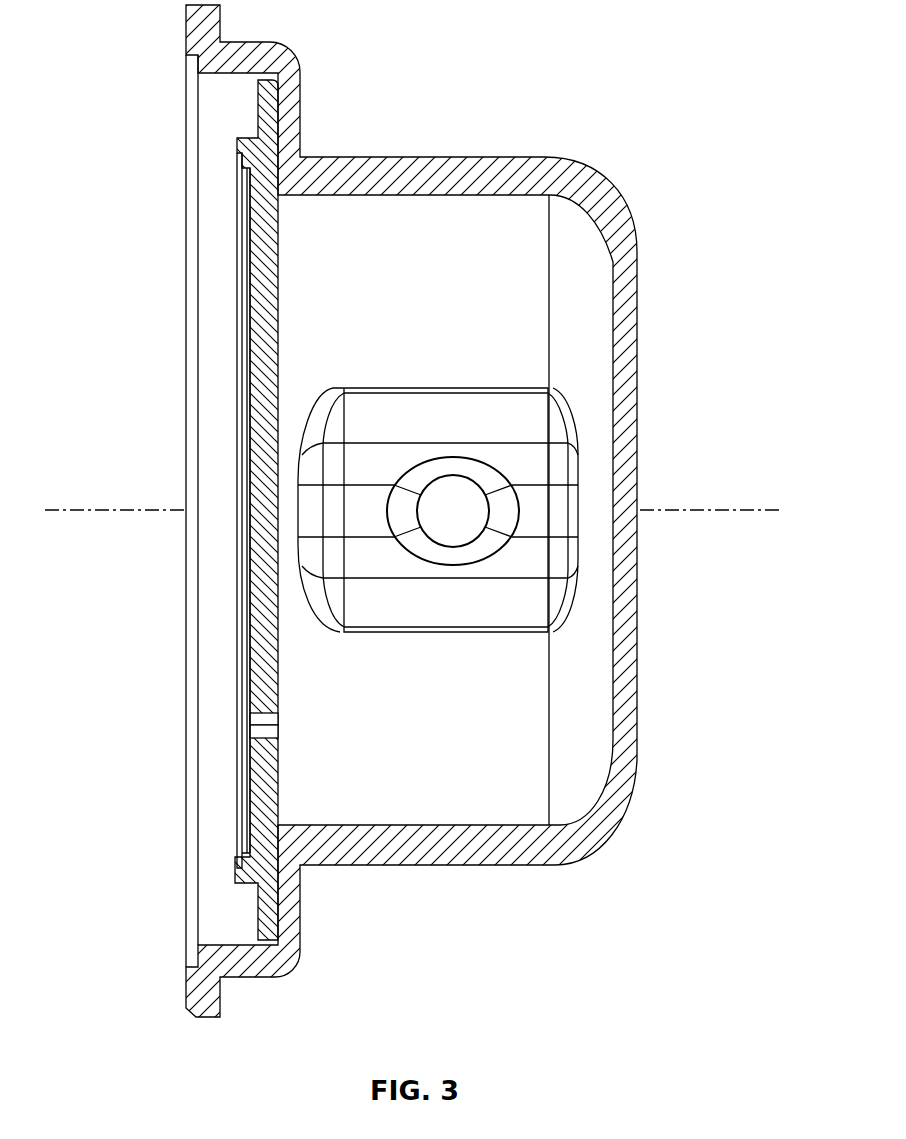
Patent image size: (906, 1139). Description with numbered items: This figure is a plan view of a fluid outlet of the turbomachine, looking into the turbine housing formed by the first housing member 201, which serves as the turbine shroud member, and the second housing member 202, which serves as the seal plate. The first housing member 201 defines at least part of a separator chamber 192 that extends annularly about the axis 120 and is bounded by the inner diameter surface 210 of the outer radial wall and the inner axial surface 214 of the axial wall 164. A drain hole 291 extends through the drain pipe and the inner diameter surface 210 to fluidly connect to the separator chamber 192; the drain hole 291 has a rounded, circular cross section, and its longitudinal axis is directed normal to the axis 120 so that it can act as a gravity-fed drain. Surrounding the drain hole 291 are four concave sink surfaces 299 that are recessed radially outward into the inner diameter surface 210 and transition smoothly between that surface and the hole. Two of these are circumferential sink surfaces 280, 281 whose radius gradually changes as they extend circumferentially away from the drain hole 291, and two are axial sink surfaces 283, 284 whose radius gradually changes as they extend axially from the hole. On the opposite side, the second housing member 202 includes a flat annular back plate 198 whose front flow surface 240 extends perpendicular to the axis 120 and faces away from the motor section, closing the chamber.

The axis 120 is at (700, 513).
The axial wall 164 is at (618, 505).
The separator chamber 192 is at (402, 245).
The back plate 198 is at (265, 320).
The first housing member 201 is at (571, 170).
The second housing member 202 is at (238, 255).
The inner diameter surface 210 is at (440, 306).
The inner axial surface 214 is at (602, 328).
The front flow surface 240 is at (231, 510).
The circumferential sink surface 280 is at (418, 521).
The circumferential sink surface 281 is at (523, 410).
The axial sink surface 283 is at (558, 503).
The axial sink surface 284 is at (332, 510).
The drain hole 291 is at (453, 495).
The concave sink surfaces 299 is at (393, 410).